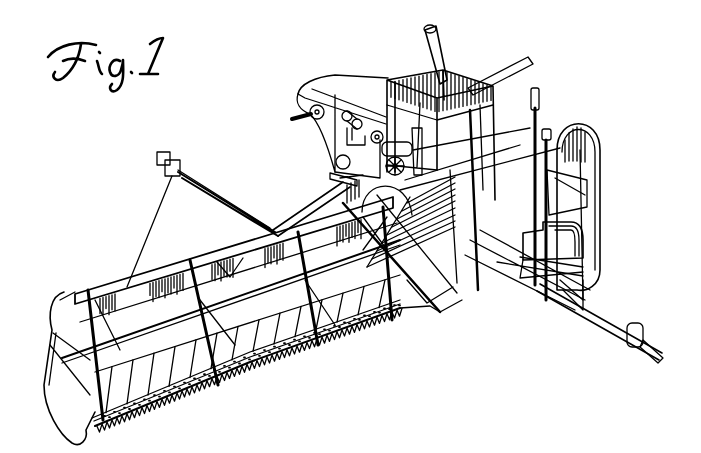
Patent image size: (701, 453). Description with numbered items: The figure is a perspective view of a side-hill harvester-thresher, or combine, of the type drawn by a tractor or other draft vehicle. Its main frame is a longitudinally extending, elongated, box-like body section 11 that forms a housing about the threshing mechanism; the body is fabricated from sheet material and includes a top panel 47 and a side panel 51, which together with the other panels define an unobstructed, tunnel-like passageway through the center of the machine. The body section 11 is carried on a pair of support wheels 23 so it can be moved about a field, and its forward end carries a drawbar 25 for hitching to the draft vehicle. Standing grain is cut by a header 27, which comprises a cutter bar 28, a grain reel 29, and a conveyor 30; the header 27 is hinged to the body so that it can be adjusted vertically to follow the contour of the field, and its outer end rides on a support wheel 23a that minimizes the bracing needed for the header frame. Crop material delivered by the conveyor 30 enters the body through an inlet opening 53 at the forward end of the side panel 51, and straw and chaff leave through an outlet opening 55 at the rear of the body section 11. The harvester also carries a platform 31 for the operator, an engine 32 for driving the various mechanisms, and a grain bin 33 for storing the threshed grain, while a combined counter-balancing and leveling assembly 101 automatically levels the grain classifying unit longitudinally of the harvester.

The body section 11 is at (345, 86).
The top panel 47 is at (372, 92).
The side panel 51 is at (382, 86).
The grain bin 33 is at (470, 73).
The platform 31 is at (540, 167).
The outlet opening 55 is at (315, 120).
The combined counter-balancing and leveling assembly 101 is at (331, 156).
The support wheels 23 is at (333, 190).
The grain reel 29 is at (219, 254).
The support wheel 23a is at (58, 303).
The engine 32 is at (583, 233).
The drawbar 25 is at (596, 316).
The inlet opening 53 is at (452, 246).
The conveyor 30 is at (305, 343).
The header 27 is at (268, 367).
The cutter bar 28 is at (213, 392).